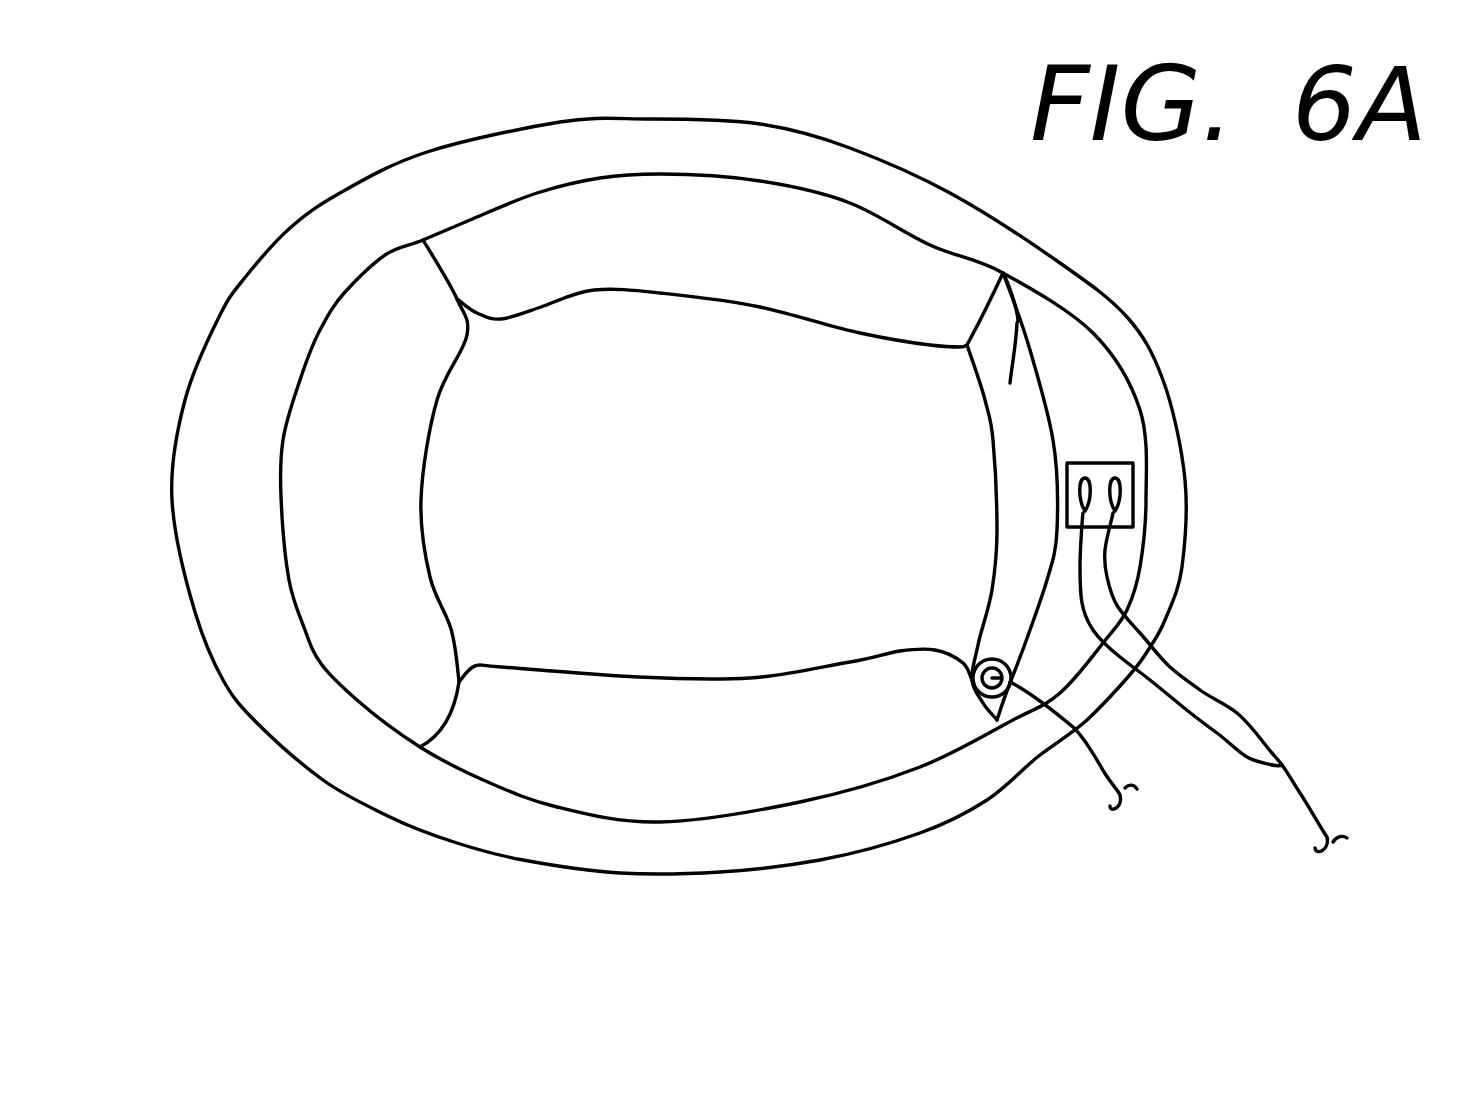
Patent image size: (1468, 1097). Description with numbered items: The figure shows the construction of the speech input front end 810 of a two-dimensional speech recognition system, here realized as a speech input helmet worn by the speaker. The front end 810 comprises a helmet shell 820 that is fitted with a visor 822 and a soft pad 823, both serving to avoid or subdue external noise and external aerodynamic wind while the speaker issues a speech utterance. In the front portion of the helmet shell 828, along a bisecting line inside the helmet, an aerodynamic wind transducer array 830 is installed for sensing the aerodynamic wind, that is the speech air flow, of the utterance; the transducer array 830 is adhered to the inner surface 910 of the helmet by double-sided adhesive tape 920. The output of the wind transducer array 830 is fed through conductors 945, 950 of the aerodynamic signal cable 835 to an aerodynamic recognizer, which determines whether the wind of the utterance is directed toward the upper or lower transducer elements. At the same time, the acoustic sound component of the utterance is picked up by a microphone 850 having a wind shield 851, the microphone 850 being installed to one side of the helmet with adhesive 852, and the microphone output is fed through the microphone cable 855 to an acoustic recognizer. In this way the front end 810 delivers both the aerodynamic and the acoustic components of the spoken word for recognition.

The speech input front end 810 is at (298, 188).
The helmet shell 820 is at (218, 318).
The visor 822 is at (987, 310).
The soft pad 823 is at (594, 718).
The front portion of the helmet shell 828 is at (1140, 363).
The aerodynamic wind transducer array 830 is at (1100, 446).
The microphone 850 is at (988, 660).
The wind shield 851 is at (1000, 662).
The adhesive 852 is at (982, 713).
The microphone cable 855 is at (1092, 754).
The inner surface 910 is at (1080, 393).
The double-sided adhesive tape 920 is at (1128, 515).
The conductor 945 is at (1202, 740).
The conductor 950 is at (1200, 689).
The aerodynamic signal cable 835 is at (1305, 807).